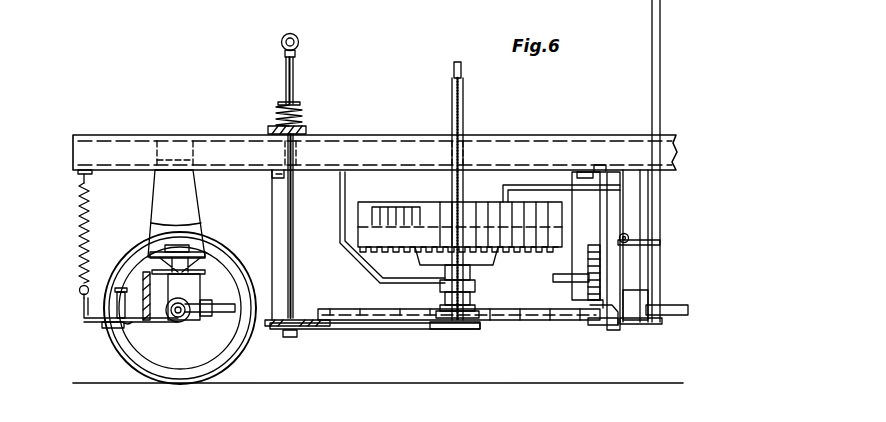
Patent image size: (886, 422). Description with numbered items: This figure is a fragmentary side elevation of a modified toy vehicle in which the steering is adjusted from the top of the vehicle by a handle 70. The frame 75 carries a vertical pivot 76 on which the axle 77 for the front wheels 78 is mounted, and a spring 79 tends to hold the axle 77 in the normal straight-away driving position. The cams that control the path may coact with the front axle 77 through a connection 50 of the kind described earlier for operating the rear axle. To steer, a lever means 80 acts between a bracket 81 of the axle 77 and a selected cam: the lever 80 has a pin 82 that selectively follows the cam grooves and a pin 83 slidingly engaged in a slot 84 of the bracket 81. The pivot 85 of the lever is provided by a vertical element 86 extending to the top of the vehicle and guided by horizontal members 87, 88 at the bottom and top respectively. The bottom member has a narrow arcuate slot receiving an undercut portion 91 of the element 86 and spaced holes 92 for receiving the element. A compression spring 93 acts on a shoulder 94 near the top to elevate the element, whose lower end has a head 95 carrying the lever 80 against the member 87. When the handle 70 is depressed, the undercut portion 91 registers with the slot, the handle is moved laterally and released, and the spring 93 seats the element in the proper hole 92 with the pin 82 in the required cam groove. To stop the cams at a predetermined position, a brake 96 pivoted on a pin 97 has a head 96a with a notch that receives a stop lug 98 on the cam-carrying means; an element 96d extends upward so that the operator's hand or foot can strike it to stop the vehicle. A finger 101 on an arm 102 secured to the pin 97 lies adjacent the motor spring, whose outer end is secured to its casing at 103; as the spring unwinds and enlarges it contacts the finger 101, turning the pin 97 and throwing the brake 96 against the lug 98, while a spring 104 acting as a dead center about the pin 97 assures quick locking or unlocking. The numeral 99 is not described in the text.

The connection 50 is at (236, 314).
The handle 70 is at (299, 45).
The frame 75 is at (393, 134).
The vertical pivot 76 is at (200, 262).
The axle 77 is at (181, 323).
The front wheels 78 is at (115, 360).
The spring 79 is at (80, 230).
The lever means 80 is at (386, 332).
The bracket 81 is at (84, 312).
The pin 82 is at (469, 330).
The pin 83 is at (116, 292).
The slot 84 is at (108, 326).
The pivot 85 is at (284, 300).
The vertical element 86 is at (285, 193).
The horizontal member 87 is at (275, 328).
The horizontal member 88 is at (308, 130).
The undercut portion 91 is at (294, 316).
The spaced holes 92 is at (300, 327).
The compression spring 93 is at (300, 112).
The shoulder 94 is at (275, 108).
The head 95 is at (290, 338).
The brake 96 is at (625, 246).
The head 96a is at (594, 326).
The element 96d is at (662, 82).
The pin 97 is at (630, 235).
The stop lug 98 is at (566, 321).
The rack plate 99 is at (516, 324).
The finger 101 is at (503, 196).
The arm 102 is at (596, 168).
The securing point 103 is at (373, 210).
The spring 104 is at (661, 242).